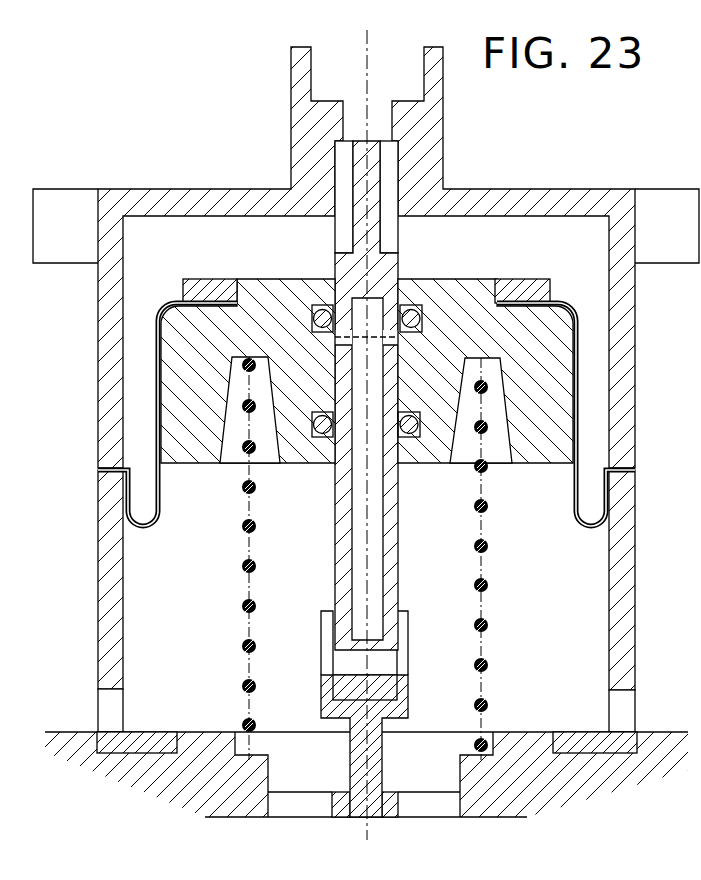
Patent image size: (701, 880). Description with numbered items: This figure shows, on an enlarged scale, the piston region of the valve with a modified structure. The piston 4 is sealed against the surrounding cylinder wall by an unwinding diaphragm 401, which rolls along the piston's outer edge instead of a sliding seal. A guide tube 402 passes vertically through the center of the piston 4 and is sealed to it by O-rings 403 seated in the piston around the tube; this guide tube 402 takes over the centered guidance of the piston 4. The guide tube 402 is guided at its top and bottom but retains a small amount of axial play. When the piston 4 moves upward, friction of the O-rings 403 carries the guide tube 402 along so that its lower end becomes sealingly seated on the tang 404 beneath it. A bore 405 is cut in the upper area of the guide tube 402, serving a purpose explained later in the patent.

The piston 4 is at (185, 403).
The unwinding diaphragm 401 is at (157, 523).
The guide tube 402 is at (398, 555).
The O-rings 403 is at (310, 317).
The tang 404 is at (410, 689).
The bore 405 is at (402, 332).